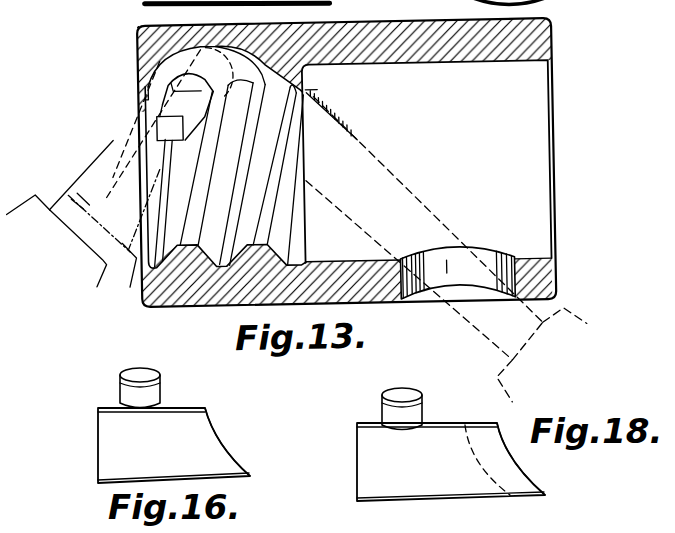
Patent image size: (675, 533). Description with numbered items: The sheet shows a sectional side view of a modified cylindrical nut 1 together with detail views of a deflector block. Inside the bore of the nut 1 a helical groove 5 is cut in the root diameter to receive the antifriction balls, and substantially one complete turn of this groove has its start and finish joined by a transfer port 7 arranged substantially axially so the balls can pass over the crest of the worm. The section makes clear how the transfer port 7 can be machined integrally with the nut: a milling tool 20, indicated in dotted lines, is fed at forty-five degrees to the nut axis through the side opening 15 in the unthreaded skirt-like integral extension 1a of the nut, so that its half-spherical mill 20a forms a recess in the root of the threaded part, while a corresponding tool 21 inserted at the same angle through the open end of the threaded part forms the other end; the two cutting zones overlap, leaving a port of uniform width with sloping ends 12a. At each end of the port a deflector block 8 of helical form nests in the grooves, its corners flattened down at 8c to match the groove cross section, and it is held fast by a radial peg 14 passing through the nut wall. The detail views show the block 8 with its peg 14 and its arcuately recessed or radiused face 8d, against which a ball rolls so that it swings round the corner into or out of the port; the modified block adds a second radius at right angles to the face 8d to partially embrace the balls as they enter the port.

In FIG. 13, the cylindrical nut 1 is at (190, 299).
In FIG. 13, the unthreaded skirt-like integral extension of the nut 1a is at (531, 118).
In FIG. 13, the helical groove in the nut 5 is at (277, 269).
In FIG. 13, the transfer port 7 is at (194, 61).
In FIG. 13, the deflector block 8 is at (163, 104).
In FIG. 16, the deflector block 8 is at (178, 420).
In FIG. 18, the deflector block 8 is at (418, 483).
In FIG. 13, the flattened corners of the block 8c is at (183, 116).
In FIG. 16, the radiused face of the block 8d is at (218, 438).
In FIG. 18, the radiused face of the block 8d is at (525, 475).
In FIG. 13, the sloping ends of the transfer port 12a is at (184, 52).
In FIG. 16, the radial peg 14 is at (135, 373).
In FIG. 18, the radial peg 14 is at (386, 410).
In FIG. 13, the parallel hole (side opening) 15 is at (472, 263).
In FIG. 13, the milling tool 20 is at (394, 184).
In FIG. 13, the half-spherical mill 20a is at (305, 99).
In FIG. 13, the milling tool 21 is at (99, 191).